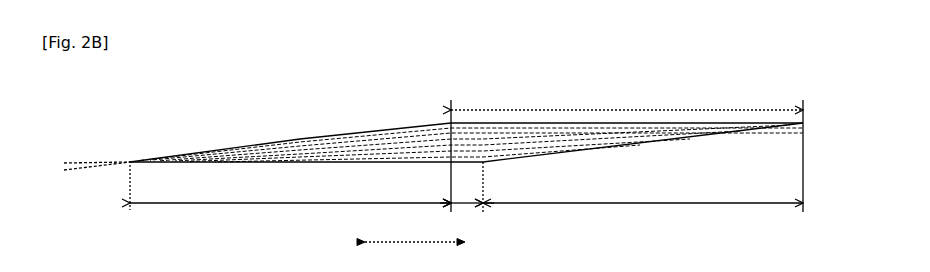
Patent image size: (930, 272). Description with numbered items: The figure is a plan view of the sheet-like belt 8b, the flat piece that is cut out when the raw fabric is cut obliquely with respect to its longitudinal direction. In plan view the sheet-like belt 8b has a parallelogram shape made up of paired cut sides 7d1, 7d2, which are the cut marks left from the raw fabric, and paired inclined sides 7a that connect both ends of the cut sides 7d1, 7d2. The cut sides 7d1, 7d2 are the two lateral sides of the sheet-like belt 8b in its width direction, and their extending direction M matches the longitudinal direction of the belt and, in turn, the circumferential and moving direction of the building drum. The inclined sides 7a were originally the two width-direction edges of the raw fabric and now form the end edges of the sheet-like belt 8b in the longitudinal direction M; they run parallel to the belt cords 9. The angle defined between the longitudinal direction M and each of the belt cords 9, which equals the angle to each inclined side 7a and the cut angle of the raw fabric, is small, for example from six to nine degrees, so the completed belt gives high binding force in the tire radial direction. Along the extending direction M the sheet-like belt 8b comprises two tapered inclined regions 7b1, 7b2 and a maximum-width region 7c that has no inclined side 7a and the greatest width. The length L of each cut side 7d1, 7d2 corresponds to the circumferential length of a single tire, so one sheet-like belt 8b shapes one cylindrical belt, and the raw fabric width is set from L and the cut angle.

The inclined sides 7a is at (355, 134).
The inclined region 7b1 is at (290, 197).
The inclined region 7b2 is at (643, 165).
The maximum-width region 7c is at (467, 165).
The cut side 7d1 is at (278, 162).
The cut side 7d2 is at (702, 124).
The sheet-like belt 8b is at (314, 133).
The belt cords 9 is at (403, 135).
The length of cut side L is at (627, 100).
The longitudinal direction M is at (415, 254).